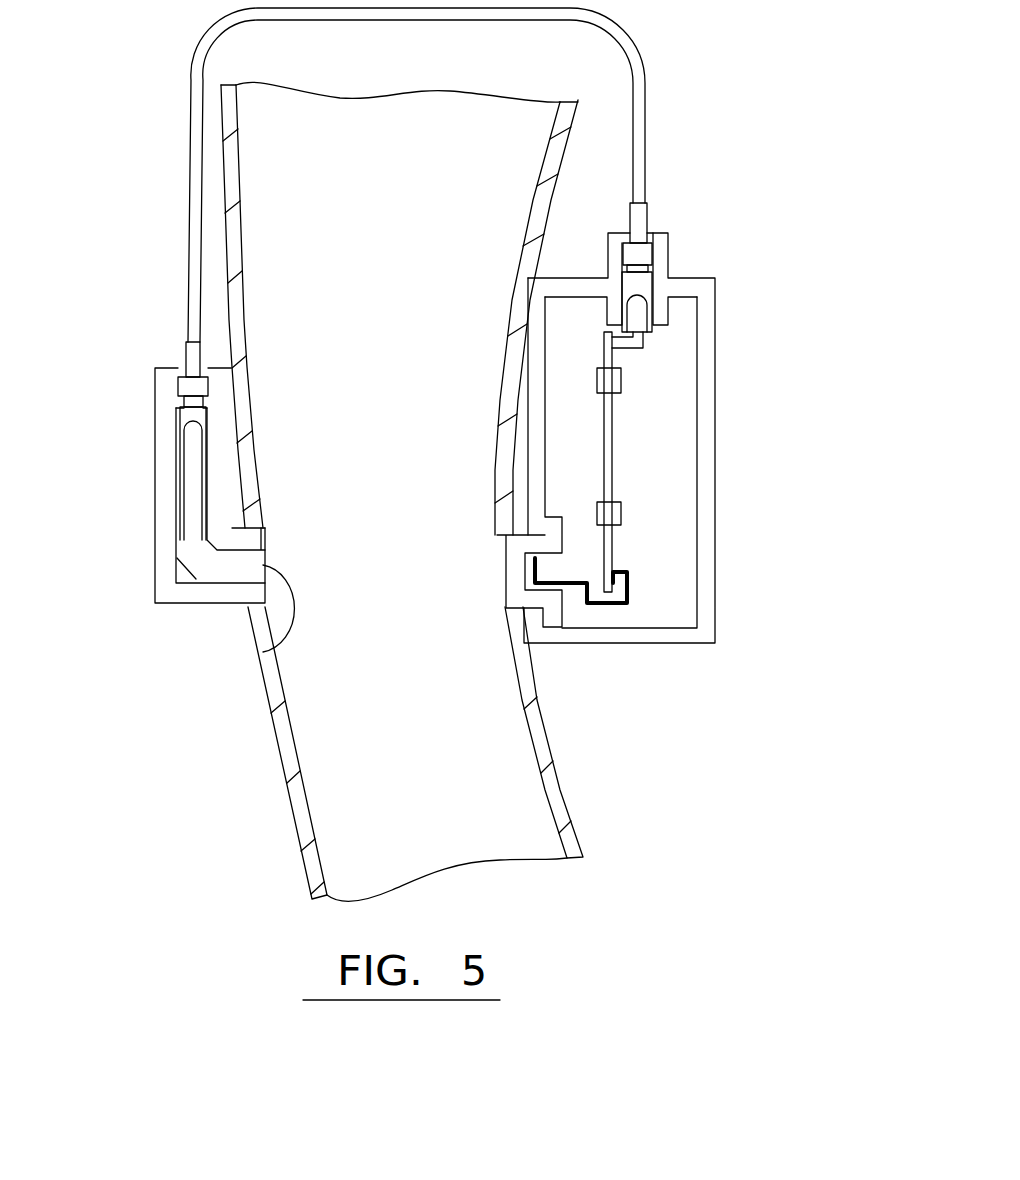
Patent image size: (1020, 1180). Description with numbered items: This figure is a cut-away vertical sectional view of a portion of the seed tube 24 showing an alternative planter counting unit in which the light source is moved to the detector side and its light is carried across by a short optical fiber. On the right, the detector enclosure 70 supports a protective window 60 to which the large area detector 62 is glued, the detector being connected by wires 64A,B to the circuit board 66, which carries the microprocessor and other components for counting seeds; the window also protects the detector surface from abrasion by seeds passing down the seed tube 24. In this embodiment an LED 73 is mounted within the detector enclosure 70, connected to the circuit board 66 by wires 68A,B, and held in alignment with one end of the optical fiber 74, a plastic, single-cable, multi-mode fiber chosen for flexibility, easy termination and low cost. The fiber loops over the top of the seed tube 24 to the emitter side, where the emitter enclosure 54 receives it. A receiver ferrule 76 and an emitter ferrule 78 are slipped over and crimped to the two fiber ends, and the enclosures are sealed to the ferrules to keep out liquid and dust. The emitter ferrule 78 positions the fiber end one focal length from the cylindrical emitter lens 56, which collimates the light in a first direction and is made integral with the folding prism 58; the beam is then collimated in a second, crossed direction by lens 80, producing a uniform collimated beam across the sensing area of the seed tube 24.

The seed tube 24 is at (567, 820).
The emitter enclosure 54 is at (148, 500).
The lens 56 is at (178, 412).
The folding prism 58 is at (183, 578).
The protective window 60 is at (563, 615).
The large area detector 62 is at (537, 567).
The wires 64A,B is at (628, 597).
The circuit board 66 is at (614, 458).
The wires 68A,B is at (643, 350).
The detector enclosure 70 is at (710, 428).
The LED 73 is at (645, 312).
The optical fiber 74 is at (647, 118).
The receiver ferrule 76 is at (652, 252).
The emitter ferrule 78 is at (173, 387).
The lens 80 is at (272, 646).